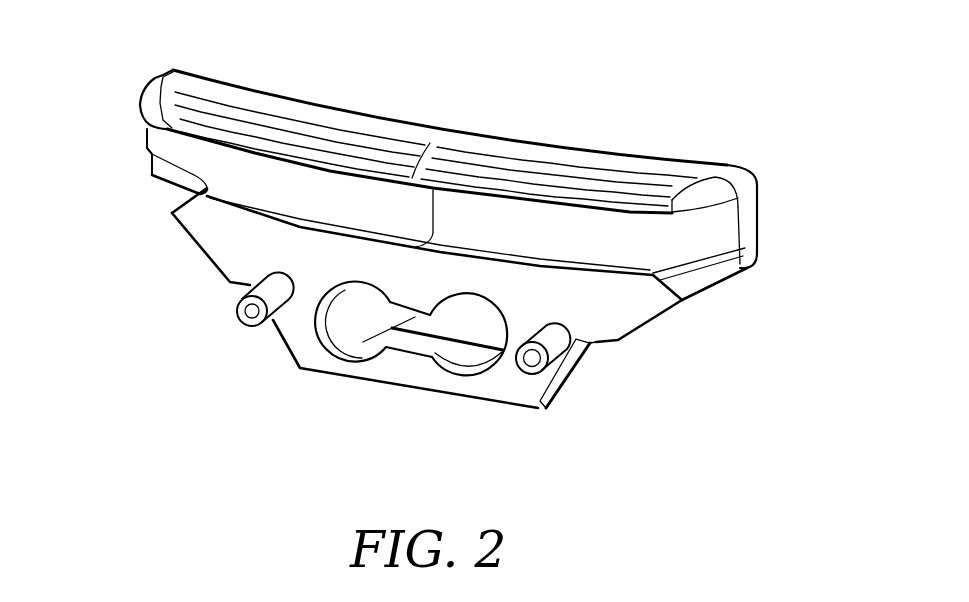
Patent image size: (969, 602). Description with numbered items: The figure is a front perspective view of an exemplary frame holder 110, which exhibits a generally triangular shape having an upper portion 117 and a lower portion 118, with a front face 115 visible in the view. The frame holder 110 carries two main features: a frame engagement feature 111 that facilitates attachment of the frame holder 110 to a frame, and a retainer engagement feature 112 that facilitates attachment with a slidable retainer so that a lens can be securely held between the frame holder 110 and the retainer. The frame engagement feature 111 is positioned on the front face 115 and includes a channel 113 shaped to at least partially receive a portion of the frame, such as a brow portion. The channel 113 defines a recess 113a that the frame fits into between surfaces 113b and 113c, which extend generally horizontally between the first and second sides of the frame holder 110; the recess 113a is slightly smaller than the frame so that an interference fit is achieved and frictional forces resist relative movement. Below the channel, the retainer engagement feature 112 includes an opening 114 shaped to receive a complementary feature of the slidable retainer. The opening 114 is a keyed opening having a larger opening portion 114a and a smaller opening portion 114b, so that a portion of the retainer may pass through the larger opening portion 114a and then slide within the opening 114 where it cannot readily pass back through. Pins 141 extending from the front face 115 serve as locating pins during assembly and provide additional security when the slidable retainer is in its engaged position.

The frame holder 110 is at (686, 50).
The frame engagement feature 111 is at (773, 222).
The retainer engagement feature 112 is at (478, 388).
The channel 113 is at (578, 186).
The recess 113a is at (636, 231).
The surface 113b is at (520, 199).
The surface 113c is at (705, 230).
The opening 114 is at (538, 407).
The larger opening portion 114a is at (345, 330).
The smaller opening portion 114b is at (415, 320).
The front face 115 is at (212, 228).
The upper portion 117 is at (140, 100).
The lower portion 118 is at (290, 354).
The pin 141 is at (237, 314).